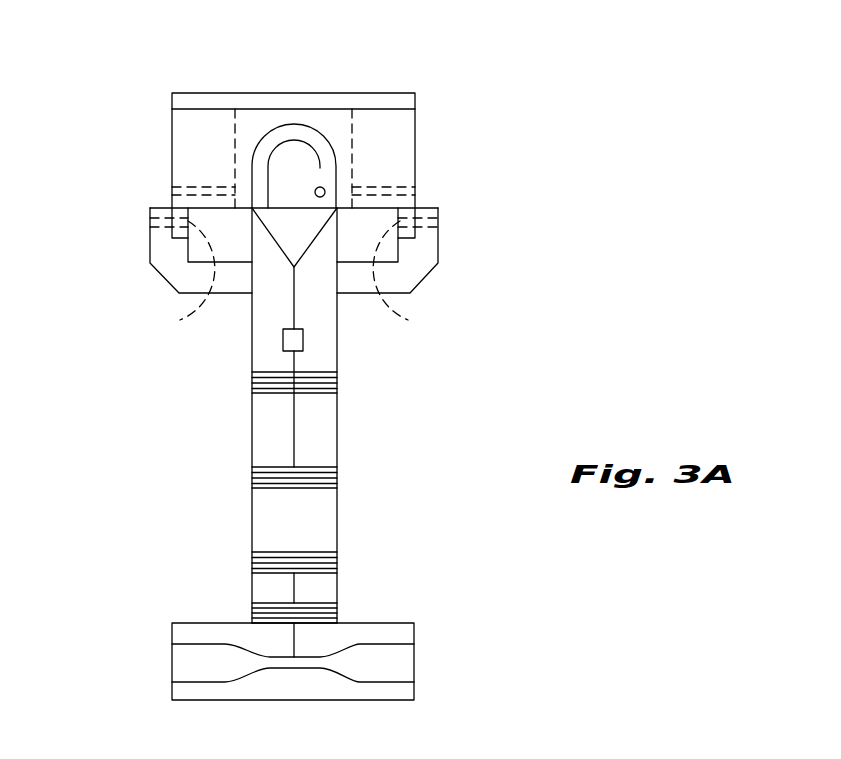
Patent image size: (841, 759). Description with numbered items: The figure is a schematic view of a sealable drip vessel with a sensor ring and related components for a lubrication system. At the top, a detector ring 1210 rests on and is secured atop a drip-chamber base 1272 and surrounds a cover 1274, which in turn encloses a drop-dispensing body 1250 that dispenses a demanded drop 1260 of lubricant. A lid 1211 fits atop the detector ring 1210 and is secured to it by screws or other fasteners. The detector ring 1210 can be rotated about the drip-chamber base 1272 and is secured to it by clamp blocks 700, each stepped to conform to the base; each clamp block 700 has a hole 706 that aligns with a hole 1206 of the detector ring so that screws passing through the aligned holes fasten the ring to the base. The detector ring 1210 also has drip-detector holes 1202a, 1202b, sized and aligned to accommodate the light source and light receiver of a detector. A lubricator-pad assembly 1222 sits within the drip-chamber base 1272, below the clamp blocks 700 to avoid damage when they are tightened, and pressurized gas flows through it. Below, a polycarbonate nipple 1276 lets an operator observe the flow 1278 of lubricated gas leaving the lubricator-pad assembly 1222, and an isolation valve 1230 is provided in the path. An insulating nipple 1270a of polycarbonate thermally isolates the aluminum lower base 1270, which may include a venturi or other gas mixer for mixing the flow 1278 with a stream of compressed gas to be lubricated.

The detector ring 1210 is at (187, 143).
The lid 1211 is at (397, 105).
The cover 1274 is at (273, 129).
The drop-dispensing body 1250 is at (314, 143).
The demanded drop 1260 is at (325, 191).
The drip-detector hole 1202a is at (417, 192).
The drip-detector hole 1202b is at (168, 190).
The hole 706 is at (140, 222).
The clamp block 700 is at (148, 252).
The hole 1206 is at (180, 320).
The isolation valve 1230 is at (325, 523).
The lubricator-pad assembly 1222 is at (283, 339).
The drip-chamber base 1272 is at (325, 343).
The flow of lubricated gas 1278 is at (293, 417).
The polycarbonate nipple 1276 is at (325, 423).
The insulating nipple 1270a is at (325, 588).
The lower base 1270 is at (408, 692).